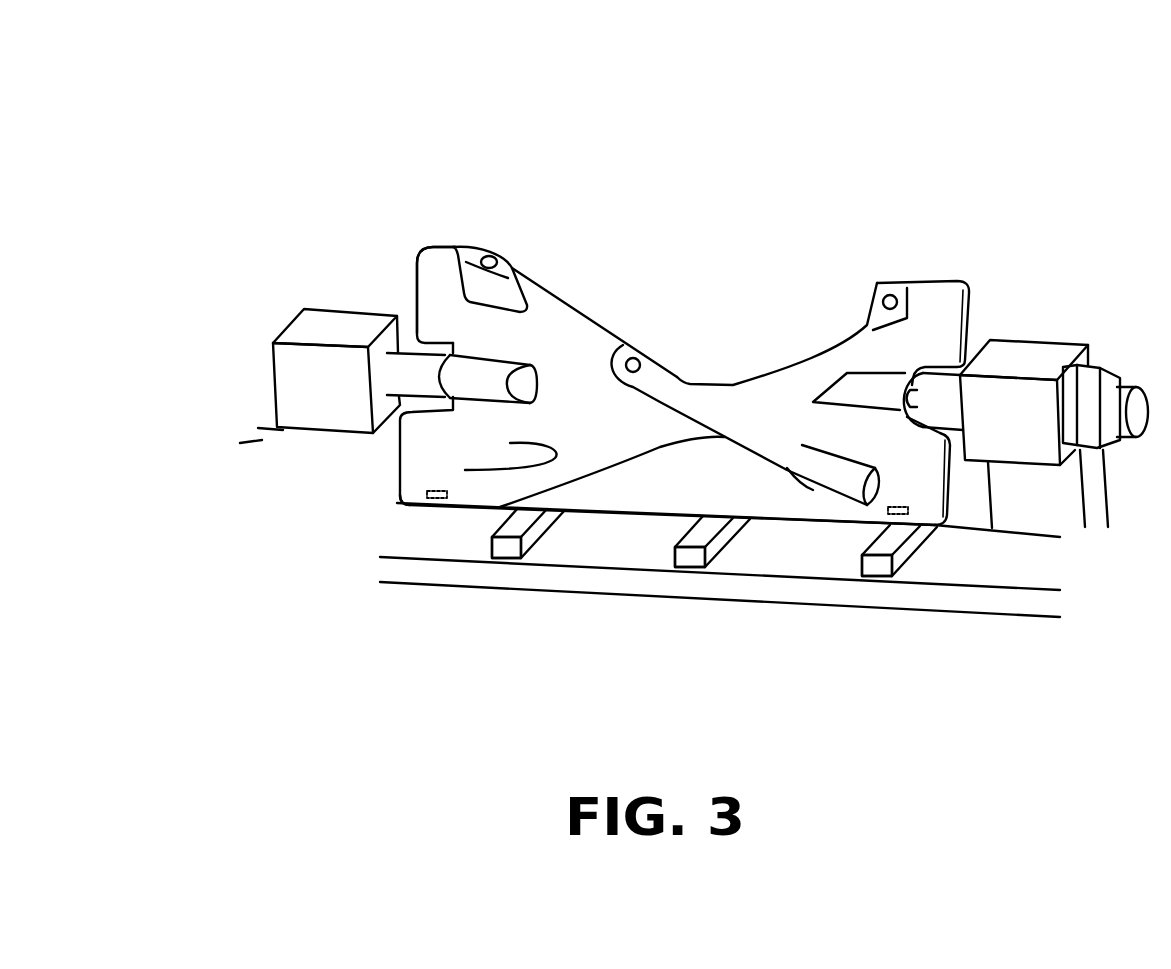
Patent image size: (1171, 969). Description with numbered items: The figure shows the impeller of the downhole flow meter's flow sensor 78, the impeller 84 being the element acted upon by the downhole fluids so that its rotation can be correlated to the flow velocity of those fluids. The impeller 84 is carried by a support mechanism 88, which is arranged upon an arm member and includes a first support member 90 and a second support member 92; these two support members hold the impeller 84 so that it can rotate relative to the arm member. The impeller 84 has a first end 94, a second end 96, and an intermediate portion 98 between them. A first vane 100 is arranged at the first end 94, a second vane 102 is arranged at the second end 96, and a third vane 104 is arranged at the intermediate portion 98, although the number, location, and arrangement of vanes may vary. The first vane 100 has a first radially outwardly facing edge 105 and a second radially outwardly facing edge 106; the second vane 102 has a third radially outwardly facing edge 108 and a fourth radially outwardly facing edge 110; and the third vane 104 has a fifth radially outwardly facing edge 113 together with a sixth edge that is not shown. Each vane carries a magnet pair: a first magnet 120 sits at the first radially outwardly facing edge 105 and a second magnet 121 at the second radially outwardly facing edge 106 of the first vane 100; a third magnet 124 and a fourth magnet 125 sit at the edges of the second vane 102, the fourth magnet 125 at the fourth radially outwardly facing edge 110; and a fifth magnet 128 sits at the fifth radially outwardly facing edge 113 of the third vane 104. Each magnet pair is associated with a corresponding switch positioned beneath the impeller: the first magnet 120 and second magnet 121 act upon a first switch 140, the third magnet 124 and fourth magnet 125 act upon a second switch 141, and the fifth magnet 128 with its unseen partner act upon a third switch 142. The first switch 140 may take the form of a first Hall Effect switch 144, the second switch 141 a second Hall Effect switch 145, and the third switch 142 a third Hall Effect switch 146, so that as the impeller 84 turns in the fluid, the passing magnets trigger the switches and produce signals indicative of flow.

The flow sensor 78 is at (360, 132).
The first vane 100 is at (388, 217).
The first radially outwardly facing edge 105 is at (438, 260).
The first magnet 120 is at (488, 252).
The third vane 104 is at (627, 327).
The impeller 84 is at (760, 250).
The intermediate portion 98 is at (703, 385).
The fifth magnet 128 is at (639, 373).
The fifth radially outwardly facing edge 113 is at (687, 397).
The fourth magnet 125 is at (888, 512).
The second magnet 121 is at (438, 498).
The second radially outwardly facing edge 106 is at (410, 506).
The third radially outwardly facing edge 108 is at (927, 282).
The third magnet 124 is at (890, 294).
The second vane 102 is at (960, 248).
The second end 96 is at (900, 372).
The second support member 92 is at (1043, 343).
The first support member 90 is at (297, 377).
The first end 94 is at (467, 377).
The support mechanism 88 is at (1082, 668).
The fourth radially outwardly facing edge 110 is at (930, 527).
The first switch 140 is at (490, 545).
The first Hall Effect switch 144 is at (507, 550).
The second switch 141 is at (670, 553).
The second Hall Effect switch 145 is at (690, 560).
The third switch 142 is at (858, 561).
The third Hall Effect switch 146 is at (878, 570).